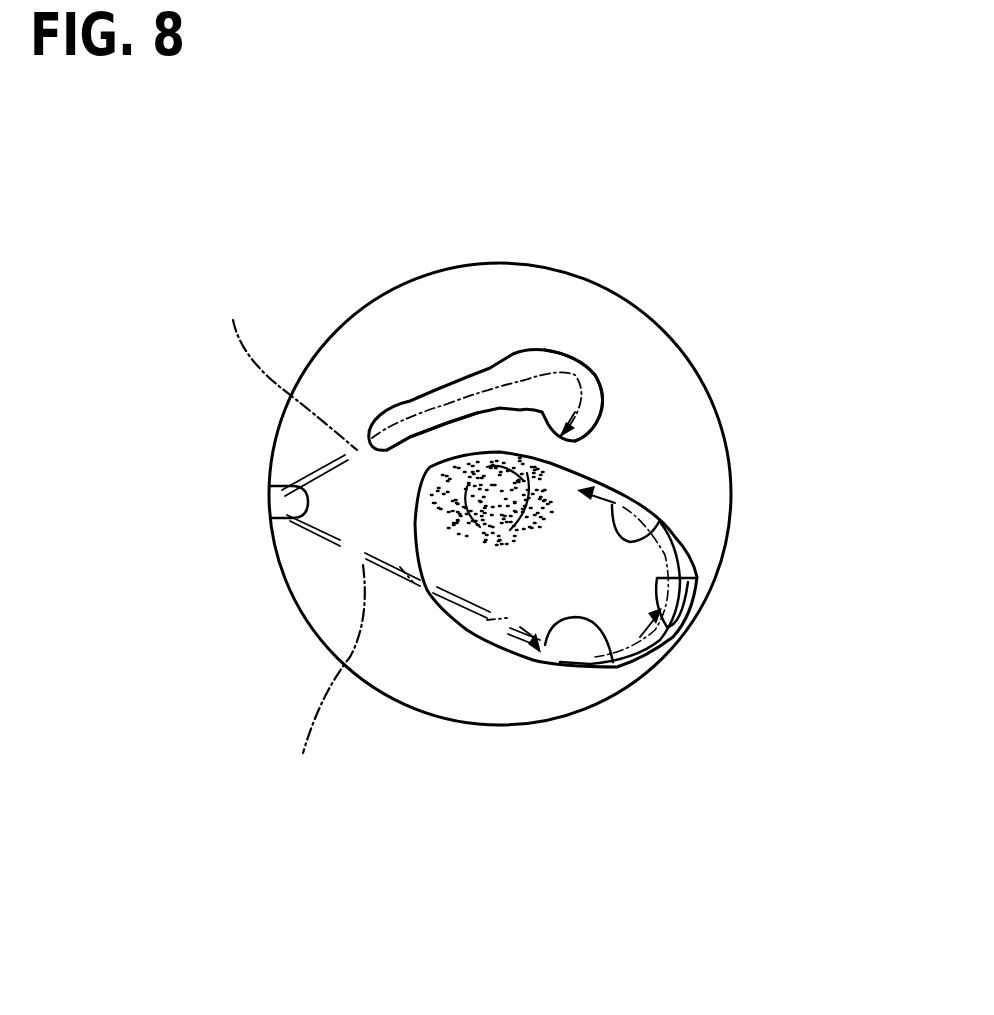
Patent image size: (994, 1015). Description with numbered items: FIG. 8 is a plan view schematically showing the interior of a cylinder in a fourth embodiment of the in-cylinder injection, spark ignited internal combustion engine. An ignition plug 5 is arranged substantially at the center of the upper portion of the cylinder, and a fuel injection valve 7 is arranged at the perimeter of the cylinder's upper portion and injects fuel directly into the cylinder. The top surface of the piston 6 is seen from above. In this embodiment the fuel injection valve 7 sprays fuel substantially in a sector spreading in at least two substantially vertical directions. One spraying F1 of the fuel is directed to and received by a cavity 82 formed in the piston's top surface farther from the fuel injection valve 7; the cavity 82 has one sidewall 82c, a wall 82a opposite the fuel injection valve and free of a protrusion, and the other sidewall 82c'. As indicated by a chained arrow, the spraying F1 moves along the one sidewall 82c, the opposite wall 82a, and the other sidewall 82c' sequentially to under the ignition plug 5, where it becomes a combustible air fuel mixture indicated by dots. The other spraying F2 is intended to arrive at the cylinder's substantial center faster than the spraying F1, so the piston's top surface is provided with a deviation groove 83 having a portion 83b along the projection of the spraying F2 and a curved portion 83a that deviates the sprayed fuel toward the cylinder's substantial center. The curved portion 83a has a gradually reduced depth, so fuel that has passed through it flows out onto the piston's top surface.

The ignition plug 5 is at (490, 470).
The piston 6 is at (470, 693).
The fuel injection valve 7 is at (283, 510).
The cavity 82 is at (660, 631).
The wall opposite the fuel injection valve 82a is at (677, 577).
The one sidewall 82c is at (630, 716).
The other sidewall 82c' is at (741, 475).
The deviation groove 83 is at (546, 294).
The curved portion 83a is at (573, 367).
The portion along projection of the other spraying 83b is at (407, 405).
The one spraying of the fuel F1 is at (413, 662).
The other spraying of the fuel F2 is at (394, 386).